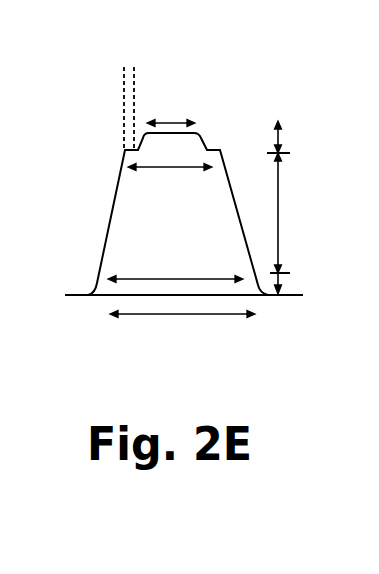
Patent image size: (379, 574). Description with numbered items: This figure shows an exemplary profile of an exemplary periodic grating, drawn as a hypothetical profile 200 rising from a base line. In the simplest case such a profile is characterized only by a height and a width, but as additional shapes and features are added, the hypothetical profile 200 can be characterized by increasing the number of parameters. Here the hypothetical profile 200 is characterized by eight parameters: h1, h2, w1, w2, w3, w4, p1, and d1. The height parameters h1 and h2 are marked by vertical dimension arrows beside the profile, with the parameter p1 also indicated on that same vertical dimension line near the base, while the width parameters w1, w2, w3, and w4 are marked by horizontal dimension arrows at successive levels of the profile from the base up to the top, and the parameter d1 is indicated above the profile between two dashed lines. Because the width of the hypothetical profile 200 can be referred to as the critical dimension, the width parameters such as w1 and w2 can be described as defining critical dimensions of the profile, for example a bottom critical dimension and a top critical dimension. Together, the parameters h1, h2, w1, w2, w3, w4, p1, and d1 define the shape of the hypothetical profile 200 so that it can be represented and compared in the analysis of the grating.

The hypothetical profile 200 is at (224, 99).
The parameter d1 is at (158, 71).
The parameter w1 is at (182, 348).
The parameter w2 is at (175, 264).
The parameter w3 is at (170, 186).
The parameter w4 is at (171, 106).
The parameter h1 is at (301, 213).
The parameter h2 is at (300, 138).
The parameter p1 is at (304, 273).